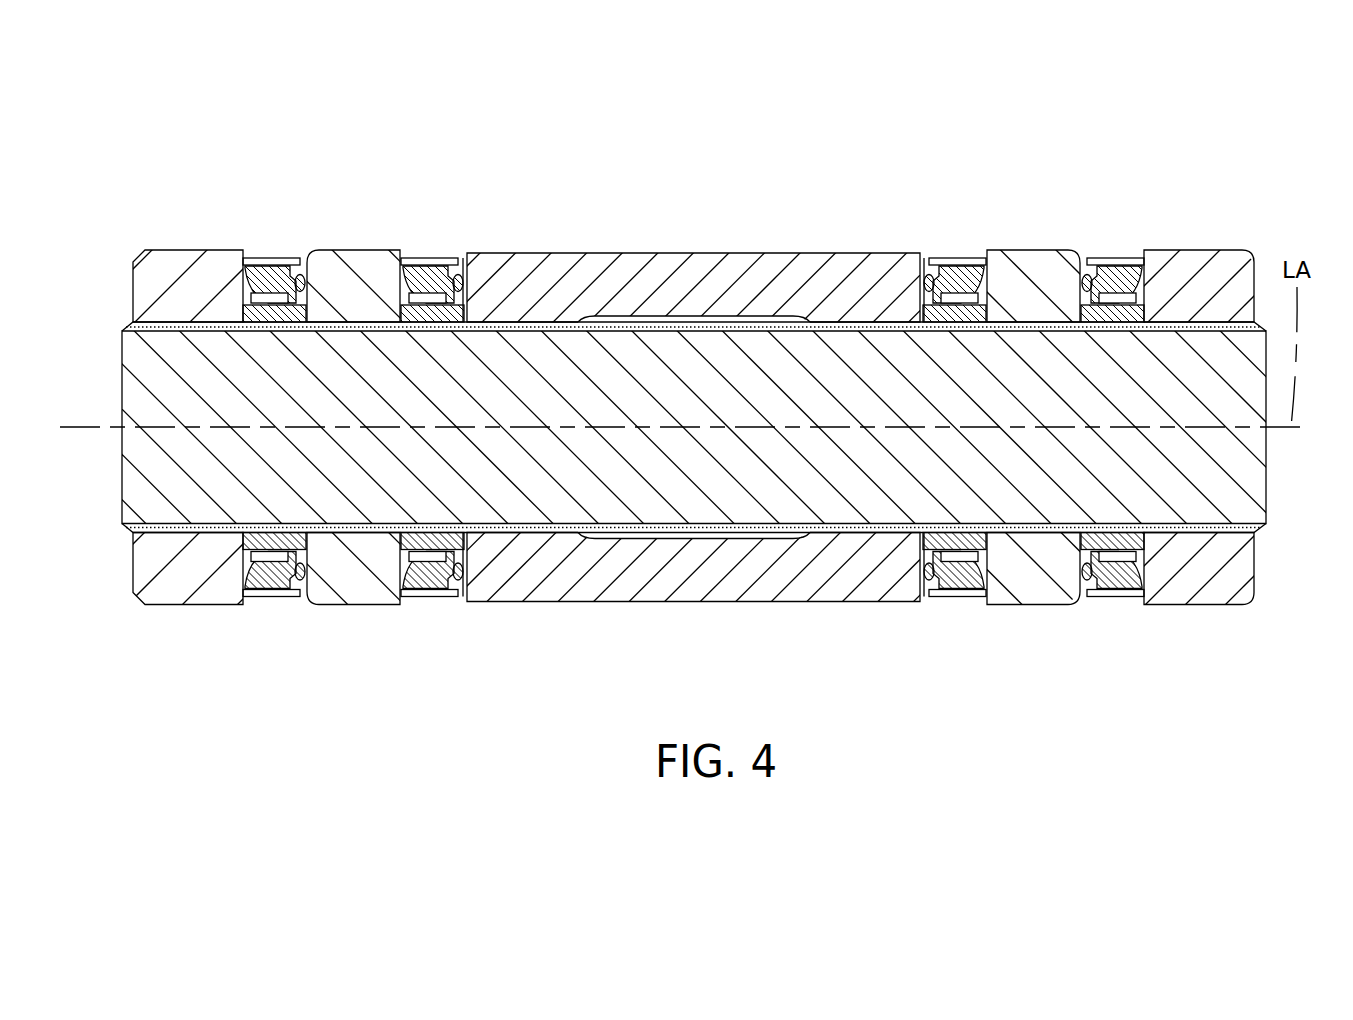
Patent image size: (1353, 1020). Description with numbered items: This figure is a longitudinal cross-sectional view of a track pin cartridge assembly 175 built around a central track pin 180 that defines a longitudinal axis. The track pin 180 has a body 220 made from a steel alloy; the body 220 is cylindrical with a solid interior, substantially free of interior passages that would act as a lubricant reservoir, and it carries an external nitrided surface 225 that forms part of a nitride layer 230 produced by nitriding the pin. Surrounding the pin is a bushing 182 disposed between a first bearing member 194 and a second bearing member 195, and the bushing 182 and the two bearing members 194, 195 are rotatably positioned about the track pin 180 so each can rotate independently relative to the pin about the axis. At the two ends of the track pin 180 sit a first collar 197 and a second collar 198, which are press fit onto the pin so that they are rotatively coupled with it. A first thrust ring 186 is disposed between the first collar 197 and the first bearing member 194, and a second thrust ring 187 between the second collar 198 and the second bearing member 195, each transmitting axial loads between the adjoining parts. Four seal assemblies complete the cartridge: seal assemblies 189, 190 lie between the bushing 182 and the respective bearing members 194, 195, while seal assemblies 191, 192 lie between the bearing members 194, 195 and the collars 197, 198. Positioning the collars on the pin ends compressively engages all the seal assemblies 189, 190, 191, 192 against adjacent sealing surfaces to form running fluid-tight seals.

The track pin cartridge assembly 175 is at (145, 200).
The track pin 180 is at (537, 483).
The bushing 182 is at (632, 268).
The first thrust ring 186 is at (277, 543).
The second thrust ring 187 is at (1113, 542).
The seal assembly 189 is at (425, 265).
The seal assembly 190 is at (955, 278).
The seal assembly 191 is at (275, 263).
The seal assembly 192 is at (1117, 277).
The first bearing member 194 is at (360, 577).
The second bearing member 195 is at (1027, 585).
The first collar 197 is at (212, 277).
The second collar 198 is at (1190, 283).
The body 220 is at (722, 487).
The external nitrided surface 225 is at (843, 315).
The nitride layer 230 is at (858, 518).